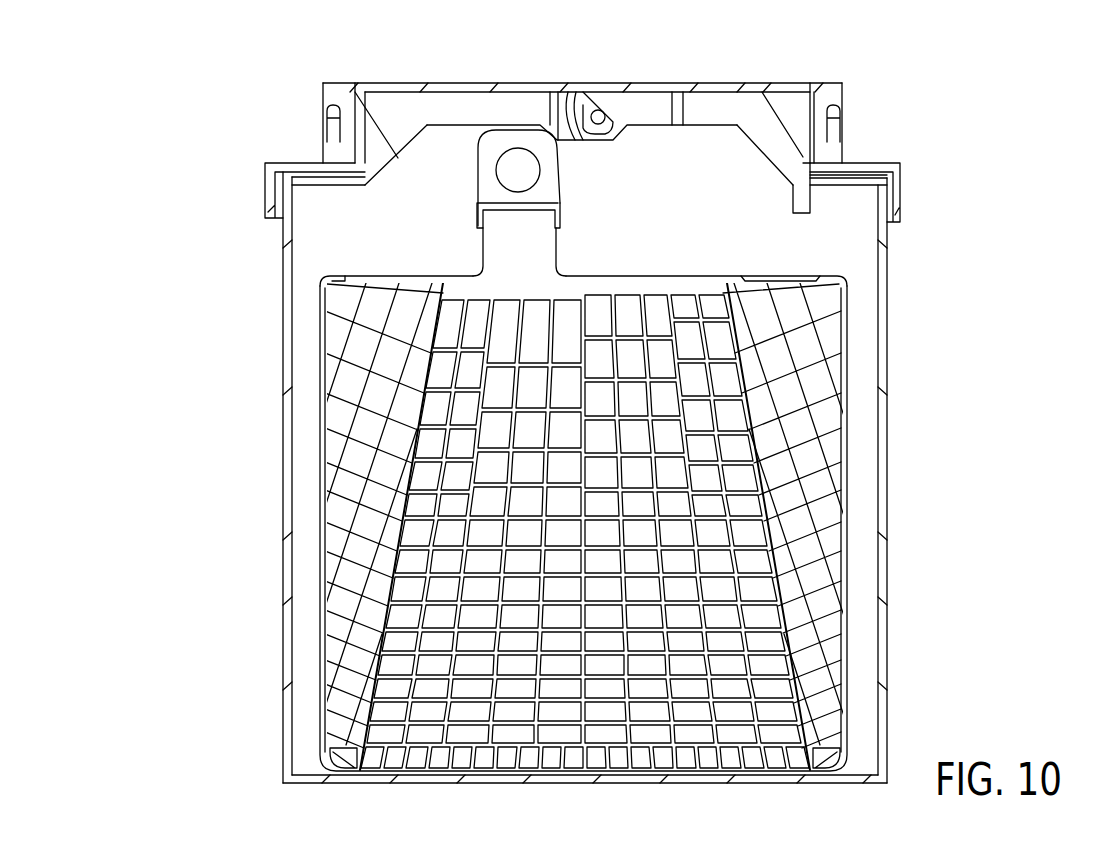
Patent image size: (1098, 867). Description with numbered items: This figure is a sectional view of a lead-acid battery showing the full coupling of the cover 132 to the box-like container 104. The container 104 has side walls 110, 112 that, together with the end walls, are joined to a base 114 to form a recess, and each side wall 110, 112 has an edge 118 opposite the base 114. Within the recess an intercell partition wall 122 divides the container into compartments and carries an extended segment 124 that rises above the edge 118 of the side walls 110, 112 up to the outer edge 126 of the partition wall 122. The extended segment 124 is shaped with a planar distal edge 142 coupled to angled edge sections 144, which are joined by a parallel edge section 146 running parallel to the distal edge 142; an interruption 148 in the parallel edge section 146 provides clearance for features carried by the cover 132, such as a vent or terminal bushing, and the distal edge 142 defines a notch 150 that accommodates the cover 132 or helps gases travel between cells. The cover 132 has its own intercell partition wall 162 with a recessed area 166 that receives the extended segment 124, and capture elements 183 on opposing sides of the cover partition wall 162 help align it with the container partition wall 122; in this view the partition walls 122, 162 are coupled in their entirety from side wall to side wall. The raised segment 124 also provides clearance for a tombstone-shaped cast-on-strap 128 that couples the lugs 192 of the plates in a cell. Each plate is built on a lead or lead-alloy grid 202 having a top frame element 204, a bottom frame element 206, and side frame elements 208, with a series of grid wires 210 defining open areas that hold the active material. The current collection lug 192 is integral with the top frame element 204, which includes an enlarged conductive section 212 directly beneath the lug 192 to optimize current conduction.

The container 104 is at (900, 425).
The side wall 110 is at (893, 378).
The side wall 112 is at (283, 372).
The base 114 is at (585, 783).
The edge 118 is at (886, 190).
The intercell partition wall 122 is at (720, 243).
The extended segment 124 is at (427, 163).
The outer edge 126 is at (460, 112).
The cast-on-strap 128 is at (553, 178).
The cover 132 is at (762, 83).
The planar distal edge 142 is at (305, 185).
The angled edge section 144 is at (396, 157).
The parallel edge section 146 is at (515, 123).
The interruption 148 is at (570, 87).
The notch 150 is at (812, 180).
The cover intercell partition wall 162 is at (493, 110).
The recessed area 166 is at (747, 118).
The capture element 183 is at (805, 185).
The lug 192 is at (548, 246).
The grid 202 is at (770, 632).
The top frame element 204 is at (683, 281).
The bottom frame element 206 is at (355, 772).
The side frame element 208 is at (325, 512).
The grid wires 210 is at (447, 605).
The enlarged conductive section 212 is at (552, 281).